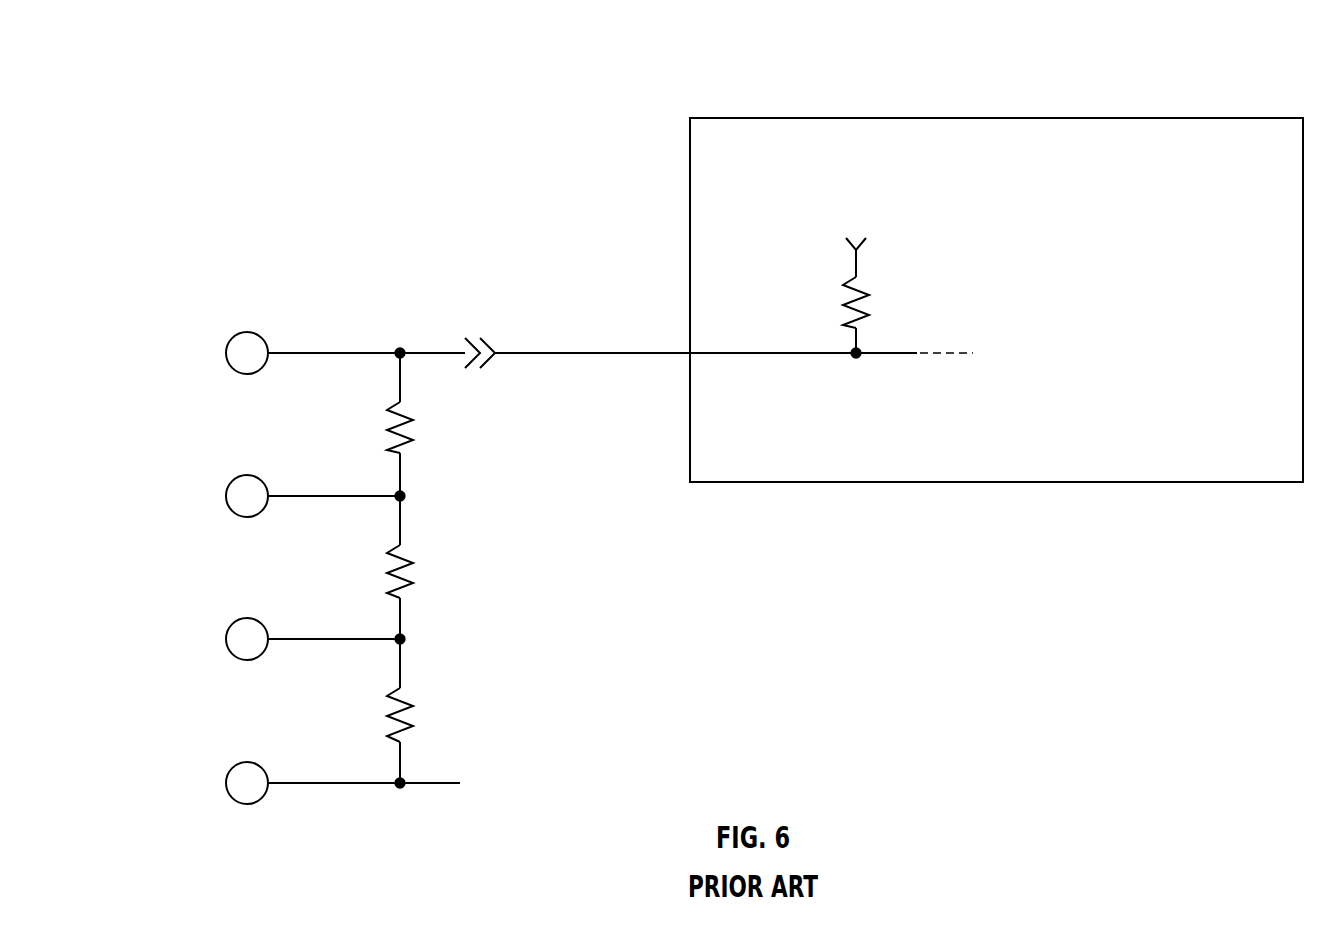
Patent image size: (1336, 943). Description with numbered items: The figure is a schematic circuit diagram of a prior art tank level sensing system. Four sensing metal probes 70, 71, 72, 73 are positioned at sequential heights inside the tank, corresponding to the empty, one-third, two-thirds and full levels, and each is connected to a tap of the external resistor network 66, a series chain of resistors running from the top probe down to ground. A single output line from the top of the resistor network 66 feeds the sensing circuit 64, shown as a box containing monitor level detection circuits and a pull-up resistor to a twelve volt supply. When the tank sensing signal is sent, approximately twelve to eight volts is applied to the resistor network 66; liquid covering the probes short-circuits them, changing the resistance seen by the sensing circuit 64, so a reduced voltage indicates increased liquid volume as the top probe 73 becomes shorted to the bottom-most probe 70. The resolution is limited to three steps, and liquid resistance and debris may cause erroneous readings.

The sensing circuit 64 is at (1003, 83).
The external resistor network 66 is at (533, 648).
The sensing metal probe 70 is at (226, 783).
The sensing metal probe 71 is at (226, 639).
The sensing metal probe 72 is at (226, 496).
The sensing metal probe 73 is at (226, 353).